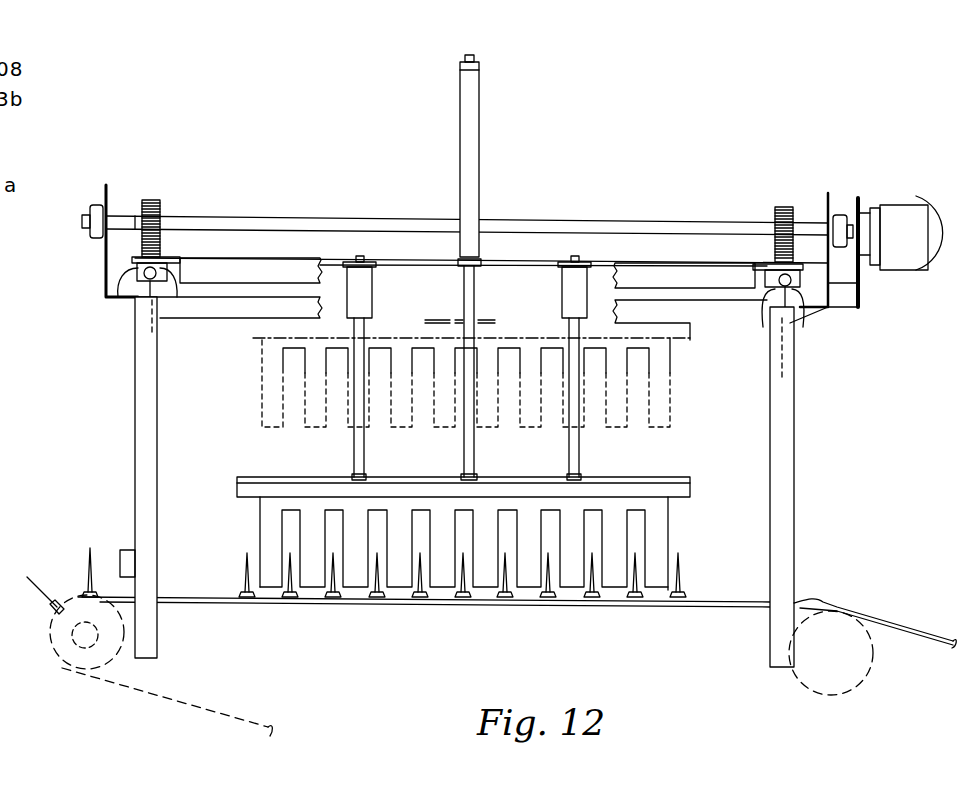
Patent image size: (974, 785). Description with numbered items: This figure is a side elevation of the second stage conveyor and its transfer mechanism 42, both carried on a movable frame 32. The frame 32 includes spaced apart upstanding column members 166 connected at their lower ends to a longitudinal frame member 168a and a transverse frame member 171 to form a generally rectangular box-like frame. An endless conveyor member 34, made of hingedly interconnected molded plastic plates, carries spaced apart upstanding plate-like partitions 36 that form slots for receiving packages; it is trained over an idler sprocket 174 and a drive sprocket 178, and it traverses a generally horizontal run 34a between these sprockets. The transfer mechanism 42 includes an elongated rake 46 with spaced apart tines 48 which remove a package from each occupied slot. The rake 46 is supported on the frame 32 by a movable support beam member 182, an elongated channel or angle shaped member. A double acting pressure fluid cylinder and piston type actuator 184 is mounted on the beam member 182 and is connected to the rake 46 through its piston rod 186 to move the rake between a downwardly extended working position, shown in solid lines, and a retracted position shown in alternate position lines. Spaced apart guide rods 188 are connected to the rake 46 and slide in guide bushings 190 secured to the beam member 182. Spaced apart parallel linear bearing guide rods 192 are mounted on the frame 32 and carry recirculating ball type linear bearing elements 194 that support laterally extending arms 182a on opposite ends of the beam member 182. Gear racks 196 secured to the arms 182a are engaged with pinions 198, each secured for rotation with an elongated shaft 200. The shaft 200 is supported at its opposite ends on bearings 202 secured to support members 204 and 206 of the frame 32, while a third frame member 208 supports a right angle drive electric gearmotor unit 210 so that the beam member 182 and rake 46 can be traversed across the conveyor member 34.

The movable frame 32 is at (805, 513).
The endless conveyor member 34 is at (136, 688).
The horizontal run 34a is at (736, 598).
The partitions 36 is at (247, 560).
The transfer mechanism 42 is at (609, 158).
The rake member 46 is at (684, 350).
The tines 48 is at (268, 600).
The column members 166 is at (135, 470).
The longitudinal frame member 168a is at (240, 322).
The transverse frame member 171 is at (148, 335).
The idler sprocket 174 is at (878, 670).
The drive sprocket 178 is at (62, 672).
The support beam member 182 is at (280, 257).
The laterally extending arms 182a is at (136, 212).
The pressure fluid cylinder and piston type actuator 184 is at (471, 168).
The piston rod 186 is at (474, 450).
The guide rods 188 is at (353, 458).
The guide bushings 190 is at (372, 290).
The linear bearing guide rods 192 is at (170, 300).
The linear bearing elements 194 is at (118, 297).
The gear racks 196 is at (157, 247).
The pinions 198 is at (150, 200).
The shaft 200 is at (592, 221).
The bearings 202 is at (100, 205).
The support member 204 is at (106, 262).
The support member 206 is at (840, 300).
The third frame member 208 is at (862, 277).
The right angle drive electric gearmotor unit 210 is at (908, 210).